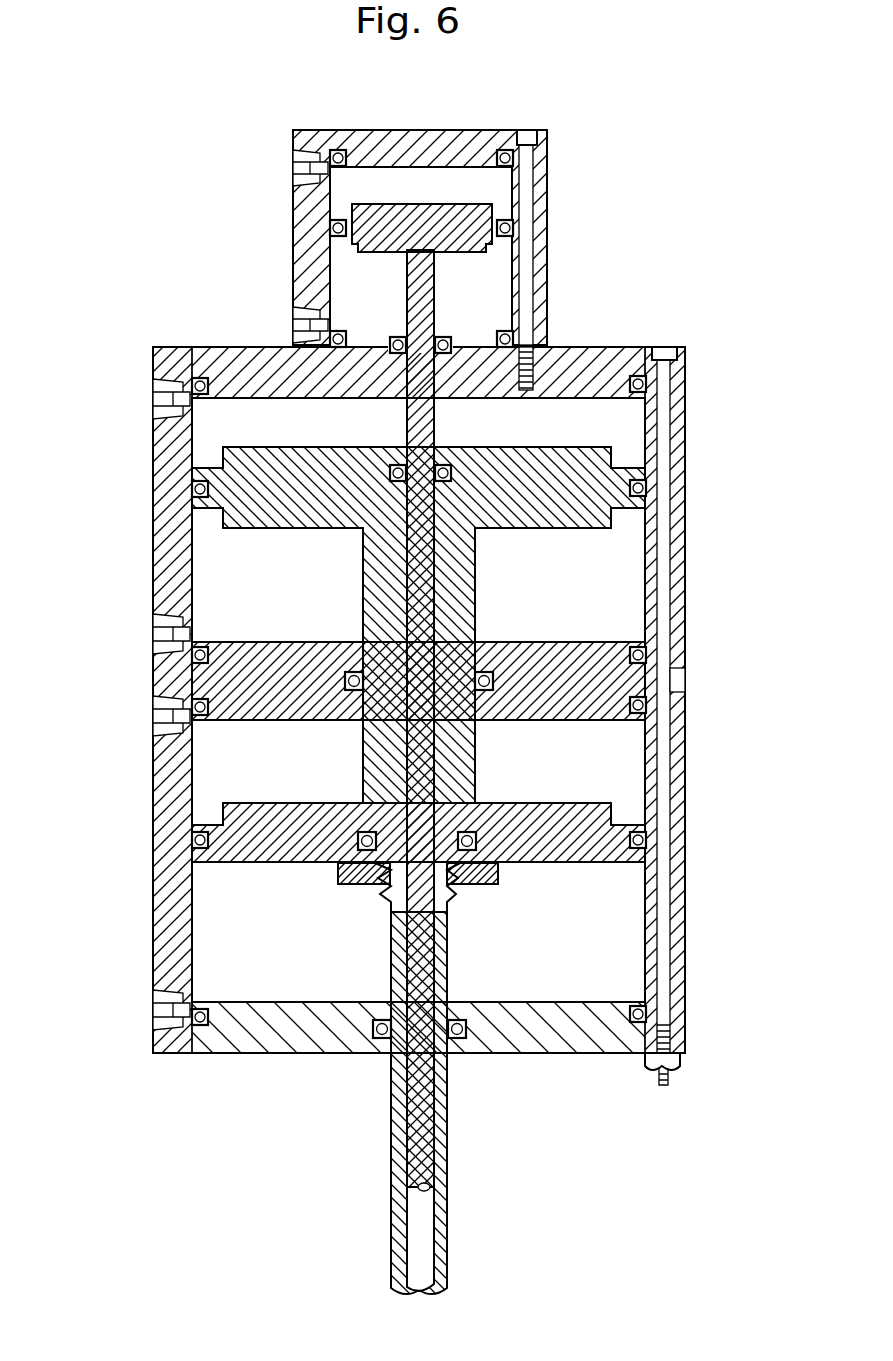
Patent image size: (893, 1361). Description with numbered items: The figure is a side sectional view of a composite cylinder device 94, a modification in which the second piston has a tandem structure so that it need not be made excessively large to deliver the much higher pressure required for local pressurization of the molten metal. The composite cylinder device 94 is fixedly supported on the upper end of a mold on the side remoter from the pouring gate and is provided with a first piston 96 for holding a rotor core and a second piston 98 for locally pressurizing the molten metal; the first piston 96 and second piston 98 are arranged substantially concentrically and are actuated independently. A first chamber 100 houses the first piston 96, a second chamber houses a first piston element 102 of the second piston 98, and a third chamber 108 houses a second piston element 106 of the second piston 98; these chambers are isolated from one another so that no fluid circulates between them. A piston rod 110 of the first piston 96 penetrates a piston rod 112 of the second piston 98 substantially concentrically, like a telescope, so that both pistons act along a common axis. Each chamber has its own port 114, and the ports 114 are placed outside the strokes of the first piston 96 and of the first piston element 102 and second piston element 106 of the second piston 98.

The composite cylinder device 94 is at (200, 206).
The first piston 96 is at (460, 201).
The second piston 98 is at (588, 438).
The first chamber 100 is at (487, 176).
The first piston element 102 is at (247, 443).
The second piston element 106 is at (567, 803).
The third chamber 108 is at (640, 943).
The piston rod 110 is at (460, 275).
The piston rod 112 is at (476, 604).
The ports 114 is at (300, 172).